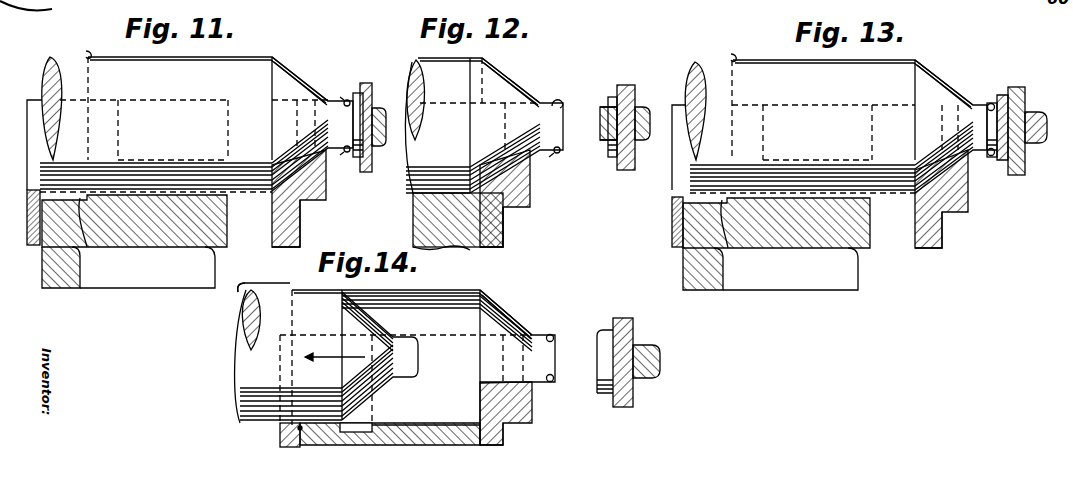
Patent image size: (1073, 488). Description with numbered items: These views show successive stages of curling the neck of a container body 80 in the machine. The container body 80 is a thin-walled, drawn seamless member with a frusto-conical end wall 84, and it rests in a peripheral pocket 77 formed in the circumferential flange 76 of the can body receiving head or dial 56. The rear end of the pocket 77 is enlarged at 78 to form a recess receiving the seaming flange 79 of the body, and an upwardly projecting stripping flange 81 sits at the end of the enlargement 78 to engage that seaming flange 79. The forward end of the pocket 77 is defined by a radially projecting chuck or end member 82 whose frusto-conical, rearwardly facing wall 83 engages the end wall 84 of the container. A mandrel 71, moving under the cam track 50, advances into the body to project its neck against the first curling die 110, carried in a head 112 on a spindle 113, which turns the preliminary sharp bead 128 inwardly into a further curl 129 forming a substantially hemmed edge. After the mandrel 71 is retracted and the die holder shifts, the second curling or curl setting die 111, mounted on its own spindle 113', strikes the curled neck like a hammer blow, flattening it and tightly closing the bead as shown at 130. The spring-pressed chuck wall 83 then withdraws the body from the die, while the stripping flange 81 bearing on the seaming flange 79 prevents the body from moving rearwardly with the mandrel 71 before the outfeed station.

In FIG. 11, the frame portion 50 is at (47, 13).
In FIG. 11, the can body receiving head or dial 56 is at (70, 268).
In FIG. 13, the can body receiving head or dial 56 is at (715, 268).
In FIG. 11, the mandrel 71 is at (75, 82).
In FIG. 12, the mandrel 71 is at (428, 152).
In FIG. 13, the mandrel 71 is at (714, 72).
In FIG. 14, the mandrel 71 is at (262, 372).
In FIG. 11, the circumferential flange 76 is at (175, 232).
In FIG. 12, the circumferential flange 76 is at (436, 225).
In FIG. 13, the circumferential flange 76 is at (855, 222).
In FIG. 14, the circumferential flange 76 is at (446, 426).
In FIG. 11, the peripheral pocket 77 is at (200, 205).
In FIG. 13, the peripheral pocket 77 is at (835, 202).
In FIG. 14, the peripheral pocket 77 is at (462, 425).
In FIG. 11, the enlargement 78 is at (85, 210).
In FIG. 13, the enlargement 78 is at (726, 210).
In FIG. 14, the enlargement 78 is at (366, 423).
In FIG. 11, the seaming flange 79 is at (91, 57).
In FIG. 13, the seaming flange 79 is at (734, 60).
In FIG. 14, the seaming flange 79 is at (280, 440).
In FIG. 11, the container body 80 is at (246, 57).
In FIG. 12, the container body 80 is at (432, 58).
In FIG. 13, the container body 80 is at (890, 60).
In FIG. 14, the container body 80 is at (470, 290).
In FIG. 11, the stripping flange 81 is at (30, 197).
In FIG. 14, the stripping flange 81 is at (280, 430).
In FIG. 11, the chuck or end member 82 is at (290, 224).
In FIG. 12, the chuck or end member 82 is at (490, 222).
In FIG. 13, the chuck or end member 82 is at (943, 242).
In FIG. 14, the chuck or end member 82 is at (507, 438).
In FIG. 11, the frusto-conical rearwardly facing wall 83 is at (300, 182).
In FIG. 12, the frusto-conical rearwardly facing wall 83 is at (506, 175).
In FIG. 13, the frusto-conical rearwardly facing wall 83 is at (948, 177).
In FIG. 14, the frusto-conical rearwardly facing wall 83 is at (510, 403).
In FIG. 11, the frusto-conical end wall 84 is at (312, 68).
In FIG. 12, the frusto-conical end wall 84 is at (496, 66).
In FIG. 13, the frusto-conical end wall 84 is at (940, 78).
In FIG. 14, the frusto-conical end wall 84 is at (503, 303).
In FIG. 11, the first curling die 110 is at (359, 158).
In FIG. 12, the first curling die 110 is at (612, 158).
In FIG. 13, the second curling or curl setting die 111 is at (993, 158).
In FIG. 14, the second curling or curl setting die 111 is at (607, 394).
In FIG. 11, the head 112 is at (365, 83).
In FIG. 12, the head 112 is at (624, 86).
In FIG. 13, the head 112 is at (1016, 88).
In FIG. 14, the head 112 is at (465, 285).
In FIG. 12, the spindle 113 is at (623, 92).
In FIG. 13, the spindle 113' is at (1027, 161).
In FIG. 14, the spindle 113' is at (667, 376).
In FIG. 12, the beaded end 128 is at (556, 100).
In FIG. 11, the further curl 129 is at (348, 100).
In FIG. 12, the further curl 129 is at (558, 154).
In FIG. 13, the closed bead 130 is at (992, 103).
In FIG. 14, the closed bead 130 is at (552, 338).